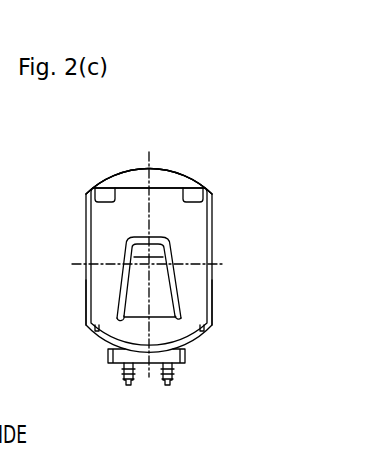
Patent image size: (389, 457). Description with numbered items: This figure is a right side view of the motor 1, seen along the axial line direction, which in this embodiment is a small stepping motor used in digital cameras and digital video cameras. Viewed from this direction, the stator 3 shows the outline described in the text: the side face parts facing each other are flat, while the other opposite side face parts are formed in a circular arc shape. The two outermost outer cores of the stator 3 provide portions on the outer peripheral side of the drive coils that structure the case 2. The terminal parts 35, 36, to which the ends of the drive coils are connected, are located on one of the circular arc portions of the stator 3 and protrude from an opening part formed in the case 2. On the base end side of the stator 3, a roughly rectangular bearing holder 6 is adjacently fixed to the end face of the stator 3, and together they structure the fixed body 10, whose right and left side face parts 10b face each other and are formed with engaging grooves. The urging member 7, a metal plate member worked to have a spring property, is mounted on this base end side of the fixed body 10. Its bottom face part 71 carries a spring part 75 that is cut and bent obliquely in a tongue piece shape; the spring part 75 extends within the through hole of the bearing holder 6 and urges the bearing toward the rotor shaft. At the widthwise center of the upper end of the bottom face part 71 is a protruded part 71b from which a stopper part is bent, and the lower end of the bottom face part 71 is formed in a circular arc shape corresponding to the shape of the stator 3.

The motor 1 is at (161, 272).
The case 2 is at (184, 174).
The stator 3 is at (175, 166).
The bearing holder 6 is at (172, 186).
The urging member 7 is at (197, 228).
The fixed body 10 is at (194, 166).
The side face parts 10b is at (84, 289).
The terminal part 35 is at (128, 387).
The terminal part 36 is at (167, 387).
The bottom face part 71 is at (98, 226).
The protruded part 71b is at (135, 188).
The spring part 75 is at (165, 298).